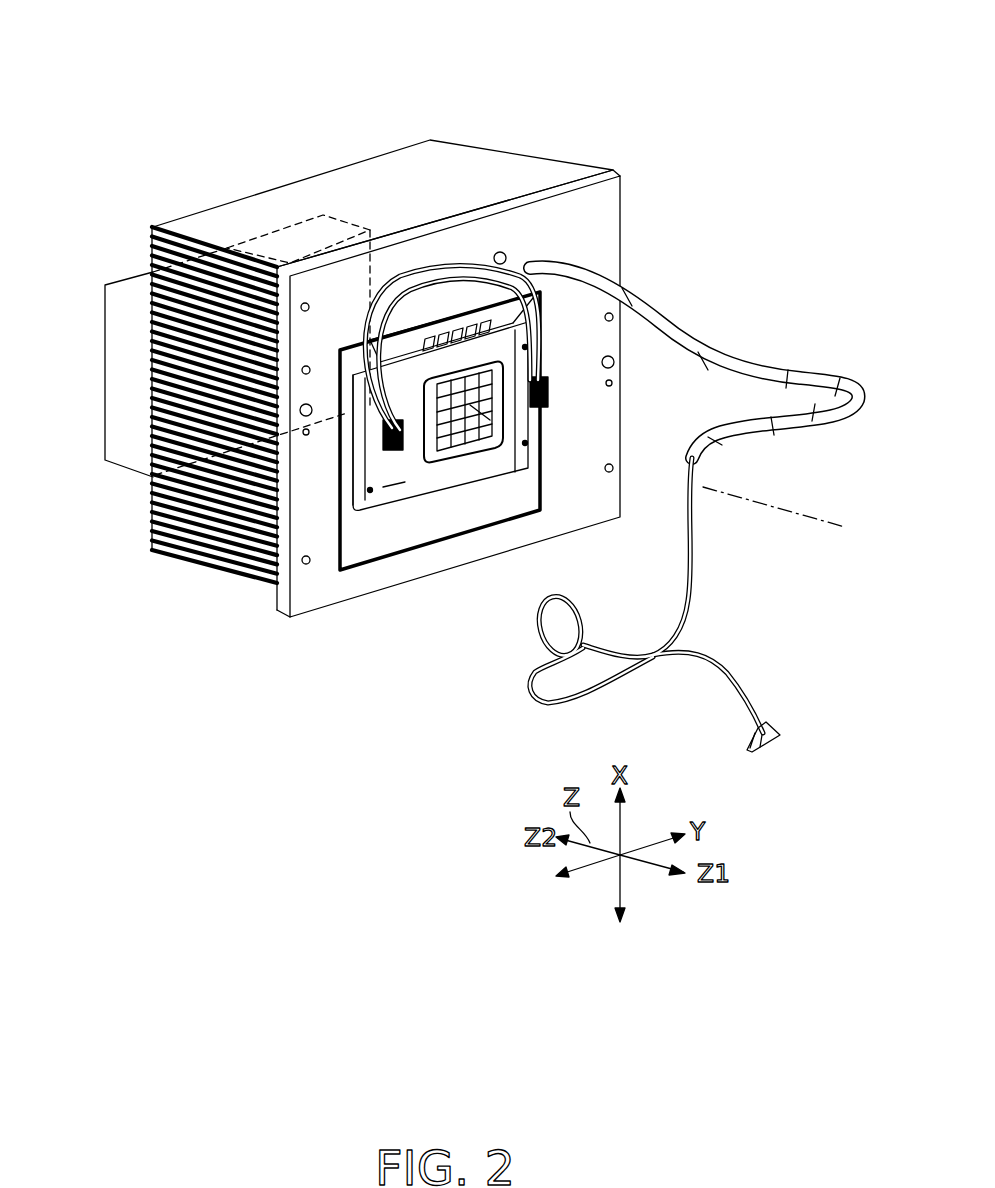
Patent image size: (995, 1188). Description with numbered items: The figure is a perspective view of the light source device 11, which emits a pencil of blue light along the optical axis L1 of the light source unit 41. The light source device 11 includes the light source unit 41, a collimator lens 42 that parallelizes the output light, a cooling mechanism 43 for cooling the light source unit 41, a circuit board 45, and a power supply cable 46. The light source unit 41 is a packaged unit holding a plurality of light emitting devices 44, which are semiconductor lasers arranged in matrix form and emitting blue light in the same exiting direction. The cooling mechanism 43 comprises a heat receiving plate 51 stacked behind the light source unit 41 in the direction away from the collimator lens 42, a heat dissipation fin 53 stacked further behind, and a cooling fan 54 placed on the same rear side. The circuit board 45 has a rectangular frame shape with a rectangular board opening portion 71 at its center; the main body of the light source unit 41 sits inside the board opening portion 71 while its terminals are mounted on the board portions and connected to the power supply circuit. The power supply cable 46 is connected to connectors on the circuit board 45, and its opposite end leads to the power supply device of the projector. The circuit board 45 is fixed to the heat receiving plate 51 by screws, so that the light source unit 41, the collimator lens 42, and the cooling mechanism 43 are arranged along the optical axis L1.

The light source device 11 is at (462, 376).
The light source unit 41 is at (485, 335).
The collimator lens 42 is at (460, 442).
The cooling mechanism 43 is at (233, 606).
The light emitting devices 44 is at (490, 432).
The circuit board 45 is at (380, 508).
The power supply cable 46 is at (660, 335).
The heat receiving plate 51 is at (462, 551).
The heat dissipation fin 53 is at (399, 168).
The cooling fan 54 is at (119, 277).
The board opening portion 71 is at (405, 490).
The optical axis L1 is at (812, 516).